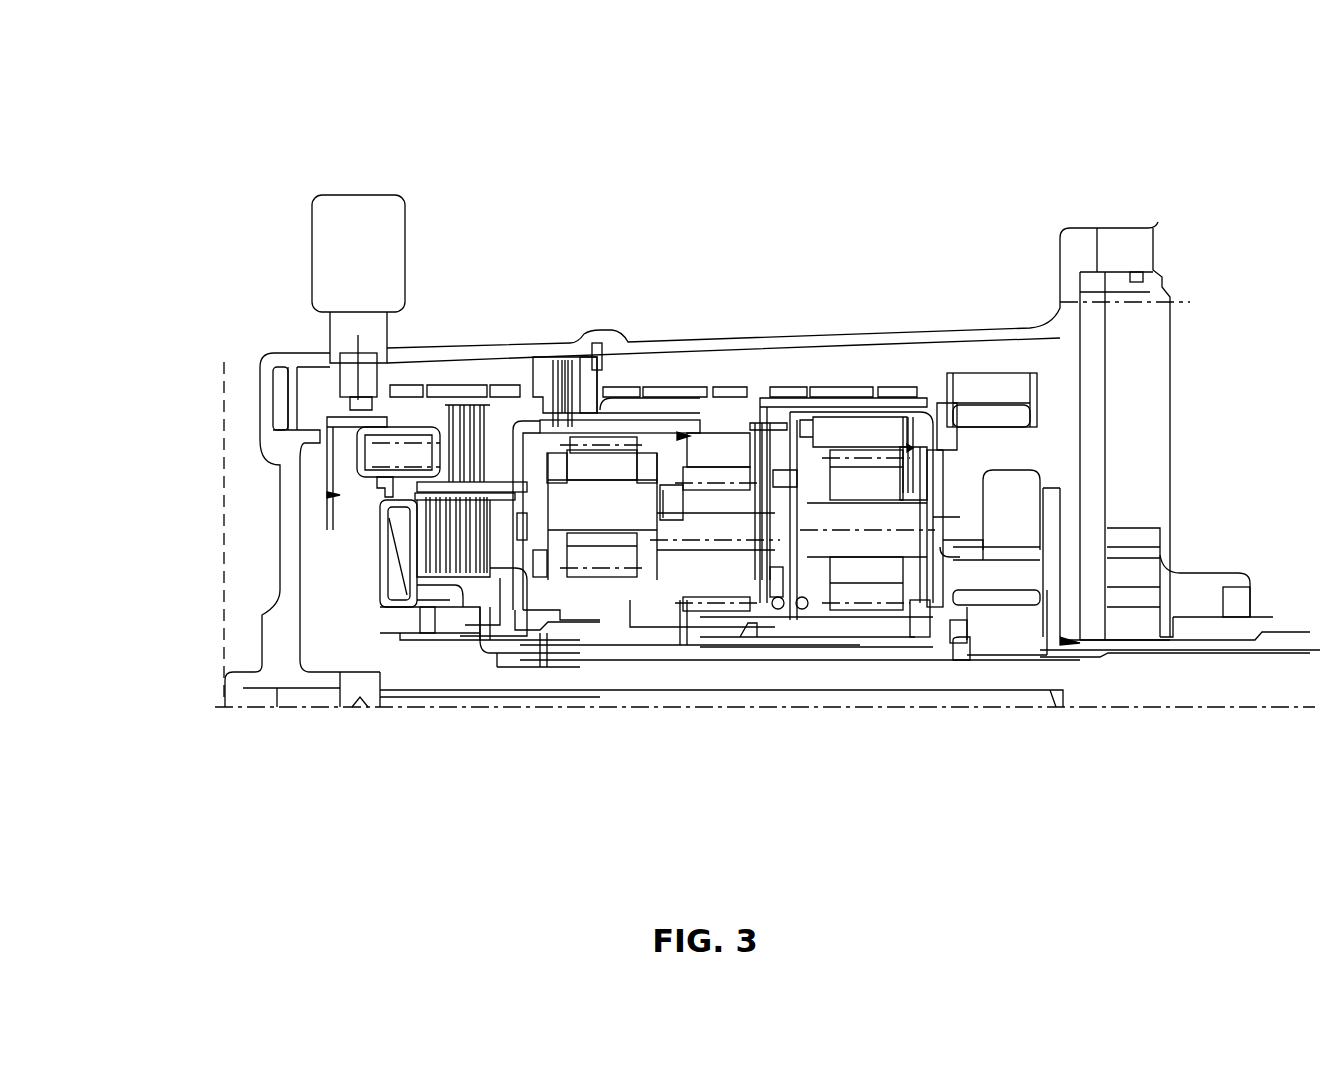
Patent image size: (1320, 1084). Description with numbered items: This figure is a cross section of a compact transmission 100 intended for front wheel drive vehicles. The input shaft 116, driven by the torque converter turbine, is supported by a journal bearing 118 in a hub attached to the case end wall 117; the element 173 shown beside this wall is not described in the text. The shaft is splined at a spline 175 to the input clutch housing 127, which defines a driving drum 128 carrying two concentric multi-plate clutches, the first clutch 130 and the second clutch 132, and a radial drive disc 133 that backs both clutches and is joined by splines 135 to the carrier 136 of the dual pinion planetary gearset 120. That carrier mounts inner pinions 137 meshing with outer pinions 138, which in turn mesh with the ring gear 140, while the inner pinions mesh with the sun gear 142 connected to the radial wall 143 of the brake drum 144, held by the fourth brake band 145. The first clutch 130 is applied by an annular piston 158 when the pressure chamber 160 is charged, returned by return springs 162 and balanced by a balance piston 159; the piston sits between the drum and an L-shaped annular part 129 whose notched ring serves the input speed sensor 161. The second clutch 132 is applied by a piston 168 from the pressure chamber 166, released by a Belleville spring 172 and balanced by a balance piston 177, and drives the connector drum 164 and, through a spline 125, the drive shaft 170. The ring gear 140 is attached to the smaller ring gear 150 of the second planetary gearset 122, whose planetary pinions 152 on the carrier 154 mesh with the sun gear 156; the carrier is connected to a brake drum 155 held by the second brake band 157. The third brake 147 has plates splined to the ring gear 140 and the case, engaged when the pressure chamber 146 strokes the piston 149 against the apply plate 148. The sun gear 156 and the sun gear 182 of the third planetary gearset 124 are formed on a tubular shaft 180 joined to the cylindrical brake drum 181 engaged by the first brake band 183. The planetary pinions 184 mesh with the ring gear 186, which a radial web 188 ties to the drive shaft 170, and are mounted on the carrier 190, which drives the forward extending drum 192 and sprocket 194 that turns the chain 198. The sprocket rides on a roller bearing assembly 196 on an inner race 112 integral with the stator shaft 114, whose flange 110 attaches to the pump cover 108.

The automatic transmission 100 is at (1107, 177).
The pump cover 108 is at (1090, 380).
The flange 110 is at (1050, 580).
The rear housing 112 is at (1017, 628).
The stator shaft 114 is at (1173, 647).
The input shaft 116 is at (1090, 683).
The end wall 117 is at (285, 665).
The journal bearing 118 is at (423, 615).
The dual pinion planetary gearset 120 is at (604, 710).
The second planetary gearset 122 is at (731, 710).
The third planetary gearset 124 is at (877, 710).
The spline 125 is at (520, 655).
The input clutch housing 127 is at (370, 620).
The driving drum 128 is at (445, 555).
The L-shaped annular part 129 is at (345, 443).
The clutch C1 130 is at (455, 420).
The clutch C2 132 is at (380, 625).
The radial drive disc 133 is at (525, 485).
The splines 135 is at (612, 625).
The carrier 136 is at (638, 615).
The inner pinions 137 is at (572, 625).
The outer pinions 138 is at (620, 460).
The ring gear 140 is at (627, 432).
The sun gear 142 is at (543, 615).
The radial wall 143 is at (655, 503).
The brake drum 144 is at (470, 430).
The brake band B4 145 is at (493, 435).
The pressure chamber 146 is at (280, 385).
The brake B3 147 is at (553, 415).
The apply plate 148 is at (546, 360).
The piston 149 is at (343, 430).
The ring gear 150 is at (700, 520).
The planetary pinions 152 is at (735, 505).
The carrier 154 is at (672, 610).
The brake drum 155 is at (609, 405).
The sun gear 156 is at (784, 612).
The brake band B2 157 is at (690, 480).
The annular piston 158 is at (390, 463).
The balance piston 159 is at (320, 447).
The pressure chamber 160 is at (355, 470).
The input speed sensor 161 is at (330, 210).
The return springs 162 is at (375, 480).
The connector drum 164 is at (490, 640).
The pressure chamber 166 is at (427, 573).
The piston 168 is at (410, 640).
The drive shaft 170 is at (760, 640).
The Belleville spring 172 is at (400, 590).
The case boss 173 is at (350, 675).
The spline 175 is at (473, 650).
The balance piston 177 is at (450, 660).
The tubular shaft 180 is at (808, 620).
The cylindrical brake drum 181 is at (822, 400).
The sun gear 182 is at (905, 625).
The brake band B1 183 is at (795, 400).
The planetary pinions 184 is at (873, 440).
The ring gear 186 is at (897, 410).
The radial web 188 is at (990, 460).
The carrier 190 is at (930, 440).
The forward extending drum 192 is at (858, 420).
The sprocket 194 is at (937, 510).
The roller bearing assembly 196 is at (1013, 597).
The chain 198 is at (1018, 390).